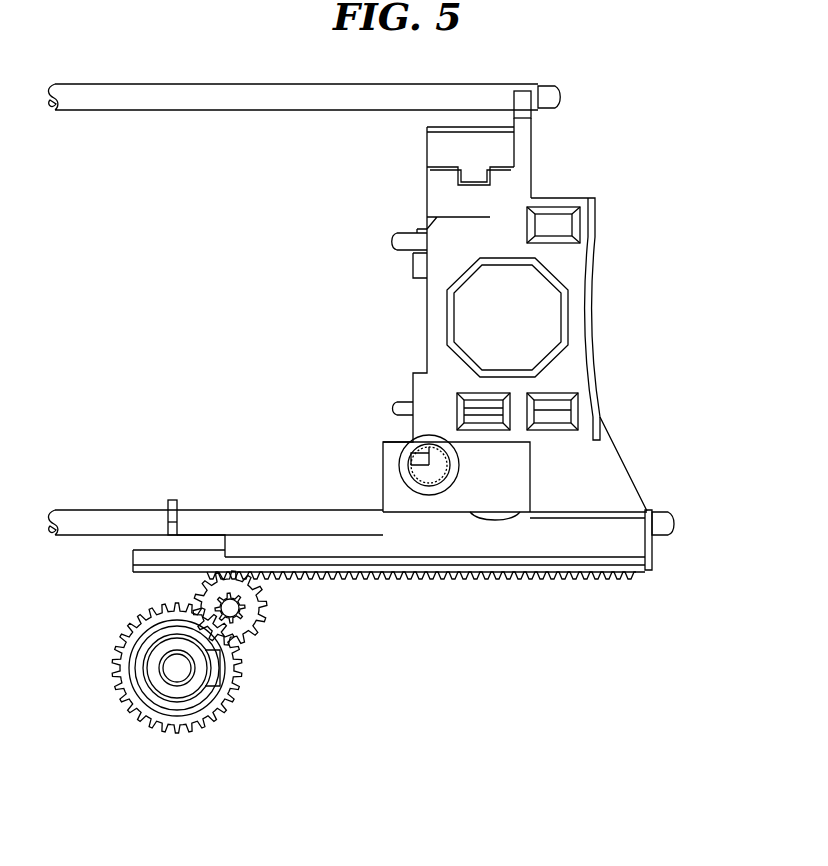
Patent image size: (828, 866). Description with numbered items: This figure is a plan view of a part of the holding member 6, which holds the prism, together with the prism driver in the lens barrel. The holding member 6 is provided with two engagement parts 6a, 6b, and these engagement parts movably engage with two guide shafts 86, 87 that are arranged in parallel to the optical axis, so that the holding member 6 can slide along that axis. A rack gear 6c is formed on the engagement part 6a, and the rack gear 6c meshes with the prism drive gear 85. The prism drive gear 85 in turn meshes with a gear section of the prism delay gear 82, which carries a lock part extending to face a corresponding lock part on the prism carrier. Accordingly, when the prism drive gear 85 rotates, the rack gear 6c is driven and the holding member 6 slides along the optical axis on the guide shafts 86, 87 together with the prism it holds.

The holding member 6 is at (568, 268).
The engagement part 6a is at (627, 547).
The engagement part 6b is at (522, 130).
The rack gear 6c is at (472, 574).
The prism delay gear 82 is at (233, 705).
The prism drive gear 85 is at (262, 622).
The guide shaft 86 is at (674, 518).
The guide shaft 87 is at (560, 94).